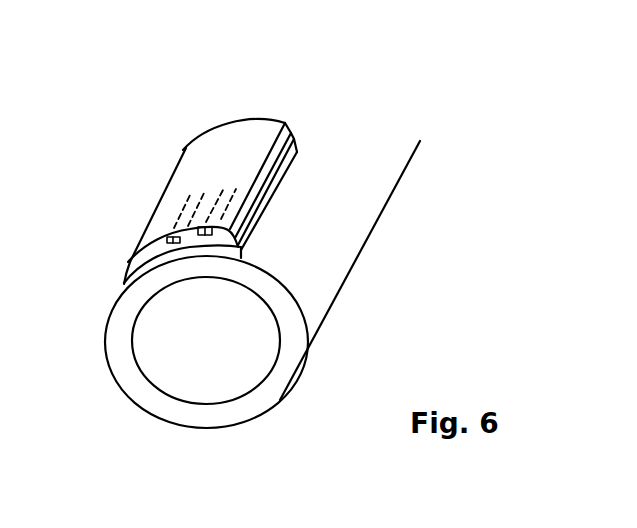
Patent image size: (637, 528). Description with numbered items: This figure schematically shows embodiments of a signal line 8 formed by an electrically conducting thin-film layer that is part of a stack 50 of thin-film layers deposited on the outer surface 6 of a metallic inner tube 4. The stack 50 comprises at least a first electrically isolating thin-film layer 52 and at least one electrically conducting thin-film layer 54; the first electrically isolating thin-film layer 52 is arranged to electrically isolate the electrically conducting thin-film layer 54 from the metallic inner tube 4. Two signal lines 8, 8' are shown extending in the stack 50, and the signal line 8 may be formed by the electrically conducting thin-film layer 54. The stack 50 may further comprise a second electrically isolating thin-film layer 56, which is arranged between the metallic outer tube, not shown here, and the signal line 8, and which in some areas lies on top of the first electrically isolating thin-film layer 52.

The metallic inner tube 4 is at (265, 392).
The outer surface 6 is at (280, 210).
The signal line 8 is at (213, 190).
The signal line 8' is at (205, 161).
The stack of thin-film layers 50 is at (195, 249).
The first electrically isolating thin-film layer 52 is at (245, 241).
The electrically conducting thin-film layer 54 is at (172, 243).
The second electrically isolating thin-film layer 56 is at (132, 256).